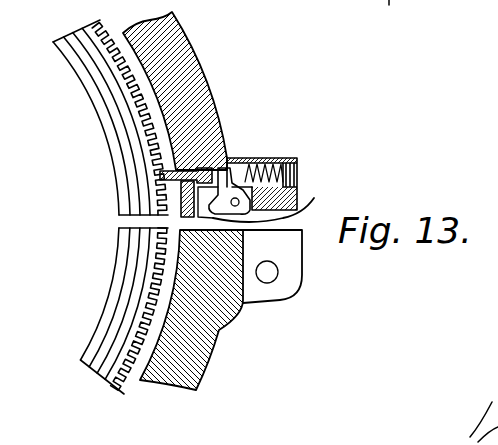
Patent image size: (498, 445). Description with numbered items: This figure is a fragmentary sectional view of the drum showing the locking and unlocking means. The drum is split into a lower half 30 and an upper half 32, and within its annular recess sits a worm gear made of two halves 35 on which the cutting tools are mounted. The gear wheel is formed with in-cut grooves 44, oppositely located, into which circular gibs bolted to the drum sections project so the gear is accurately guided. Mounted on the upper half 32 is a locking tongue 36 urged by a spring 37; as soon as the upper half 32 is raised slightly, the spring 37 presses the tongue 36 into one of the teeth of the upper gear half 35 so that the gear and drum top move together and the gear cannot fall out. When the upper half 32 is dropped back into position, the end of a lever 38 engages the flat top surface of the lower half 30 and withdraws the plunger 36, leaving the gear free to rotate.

The lower half of the drum 30 is at (213, 337).
The upper half of the drum 32 is at (201, 66).
The worm gear half 35 is at (113, 140).
The locking tongue 36 is at (188, 168).
The spring 37 is at (267, 163).
The lever 38 is at (313, 200).
The in-cut grooves 44 is at (137, 183).